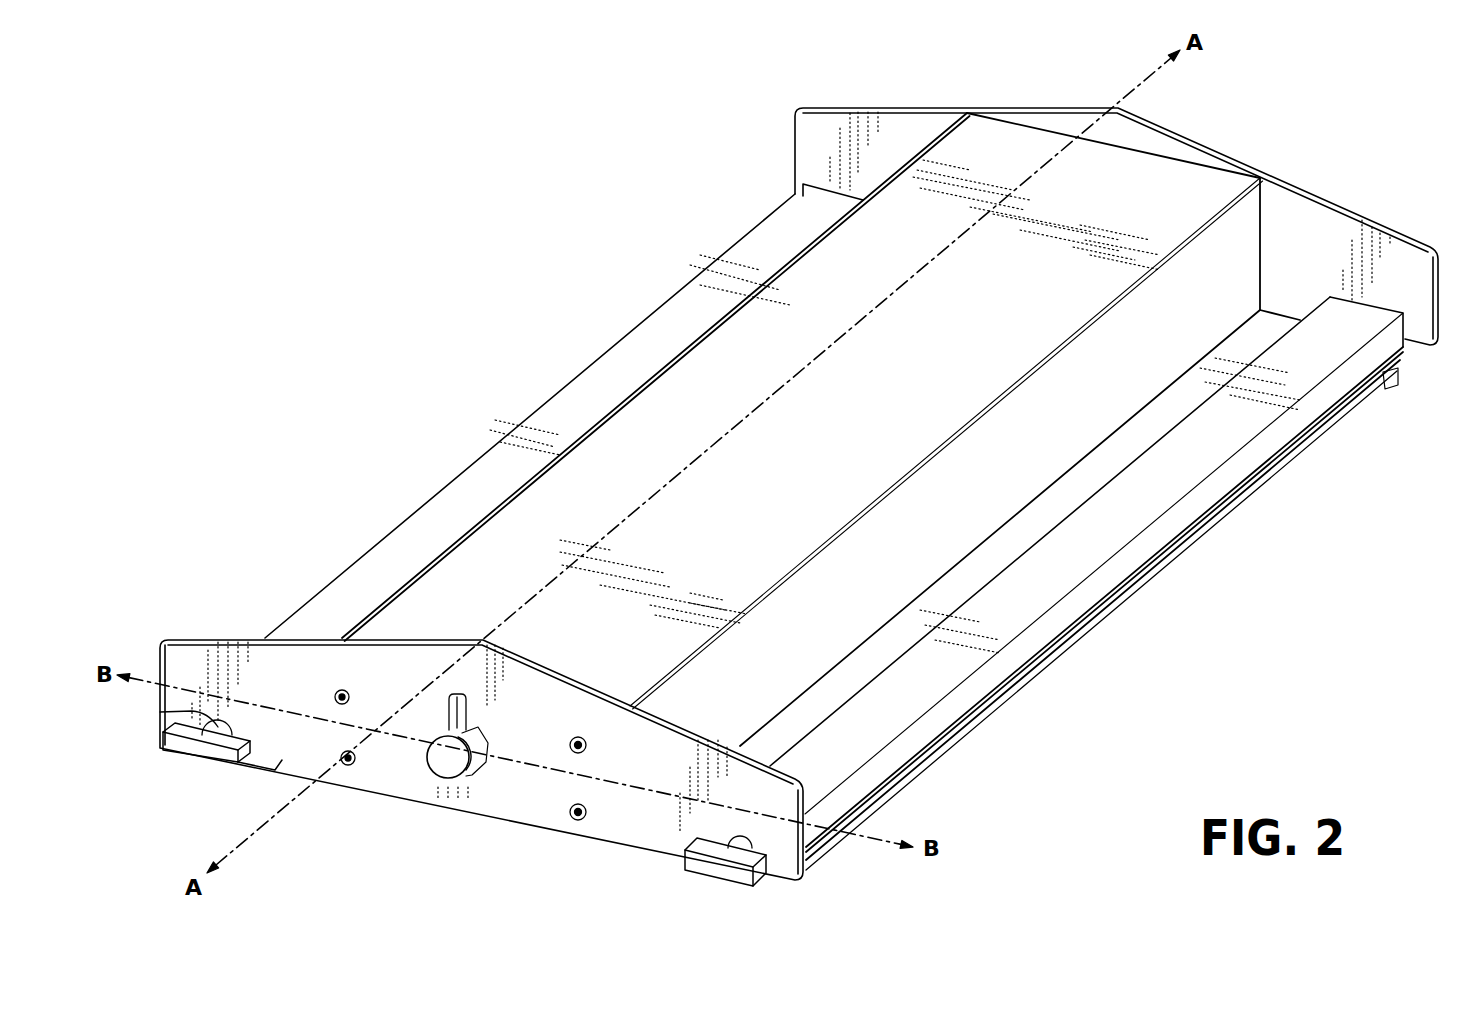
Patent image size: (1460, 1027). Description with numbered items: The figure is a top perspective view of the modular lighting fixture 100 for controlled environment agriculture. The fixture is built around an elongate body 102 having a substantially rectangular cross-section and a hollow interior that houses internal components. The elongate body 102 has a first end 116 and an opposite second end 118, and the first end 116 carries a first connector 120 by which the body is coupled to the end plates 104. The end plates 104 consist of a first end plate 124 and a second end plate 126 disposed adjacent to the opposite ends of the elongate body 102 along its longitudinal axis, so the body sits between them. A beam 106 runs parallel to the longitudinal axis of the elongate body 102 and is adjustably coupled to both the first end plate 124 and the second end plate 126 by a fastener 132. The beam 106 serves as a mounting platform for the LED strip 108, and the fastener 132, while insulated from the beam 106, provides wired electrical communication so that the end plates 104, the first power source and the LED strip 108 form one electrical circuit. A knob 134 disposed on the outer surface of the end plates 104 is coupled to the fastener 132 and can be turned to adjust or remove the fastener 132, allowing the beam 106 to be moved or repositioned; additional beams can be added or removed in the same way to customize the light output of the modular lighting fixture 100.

The modular lighting fixture 100 is at (428, 215).
The elongate body 102 is at (1162, 166).
The end plates 104 is at (915, 128).
The beam 106 is at (648, 330).
The LED strip 108 is at (1062, 645).
The first end 116 is at (1205, 190).
The second end 118 is at (453, 583).
The first connector 120 is at (447, 765).
The first end plate 124 is at (634, 818).
The second end plate 126 is at (1078, 130).
The fastener 132 is at (160, 712).
The knob 134 is at (218, 755).